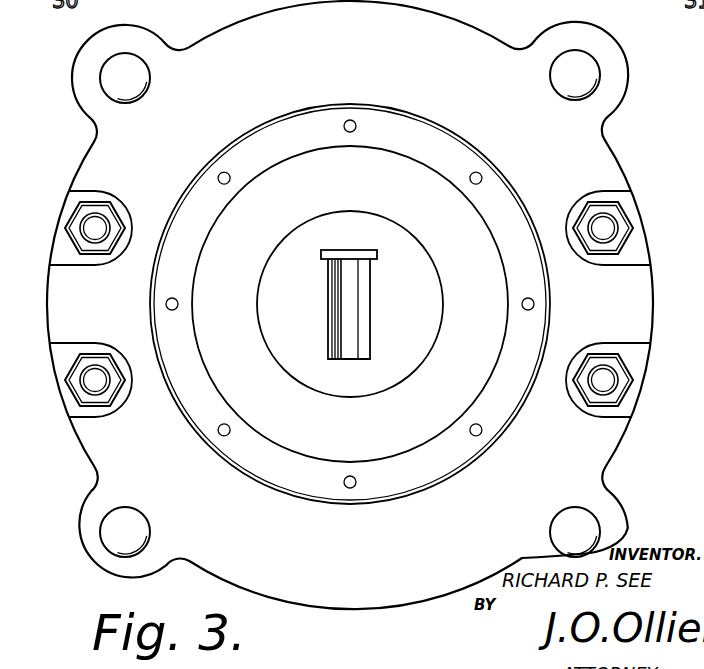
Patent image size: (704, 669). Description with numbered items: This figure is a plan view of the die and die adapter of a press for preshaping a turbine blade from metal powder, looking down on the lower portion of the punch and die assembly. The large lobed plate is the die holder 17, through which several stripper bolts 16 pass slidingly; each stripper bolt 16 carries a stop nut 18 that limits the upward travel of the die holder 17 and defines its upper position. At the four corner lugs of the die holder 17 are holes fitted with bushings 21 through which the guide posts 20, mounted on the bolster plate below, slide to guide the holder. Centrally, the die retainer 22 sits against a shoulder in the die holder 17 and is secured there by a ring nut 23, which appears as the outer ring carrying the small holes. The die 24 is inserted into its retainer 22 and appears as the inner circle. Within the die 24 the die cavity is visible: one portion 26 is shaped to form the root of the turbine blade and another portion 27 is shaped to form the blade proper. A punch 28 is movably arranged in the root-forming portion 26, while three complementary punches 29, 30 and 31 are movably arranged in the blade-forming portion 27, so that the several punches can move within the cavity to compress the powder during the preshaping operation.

The stripper bolt 16 is at (90, 222).
The die holder 17 is at (592, 165).
The stop nut 18 is at (68, 230).
The guide post 20 is at (110, 83).
The bushing 21 is at (80, 54).
The die retainer 22 is at (273, 180).
The ring nut 23 is at (410, 135).
The die 24 is at (443, 286).
The root-forming portion of die cavity 26 is at (358, 287).
The blade-forming portion of die cavity 27 is at (357, 326).
The punch 28 is at (342, 253).
The complementary punch 29 is at (332, 325).
The complementary punch 30 is at (353, 348).
The complementary punch 31 is at (369, 324).